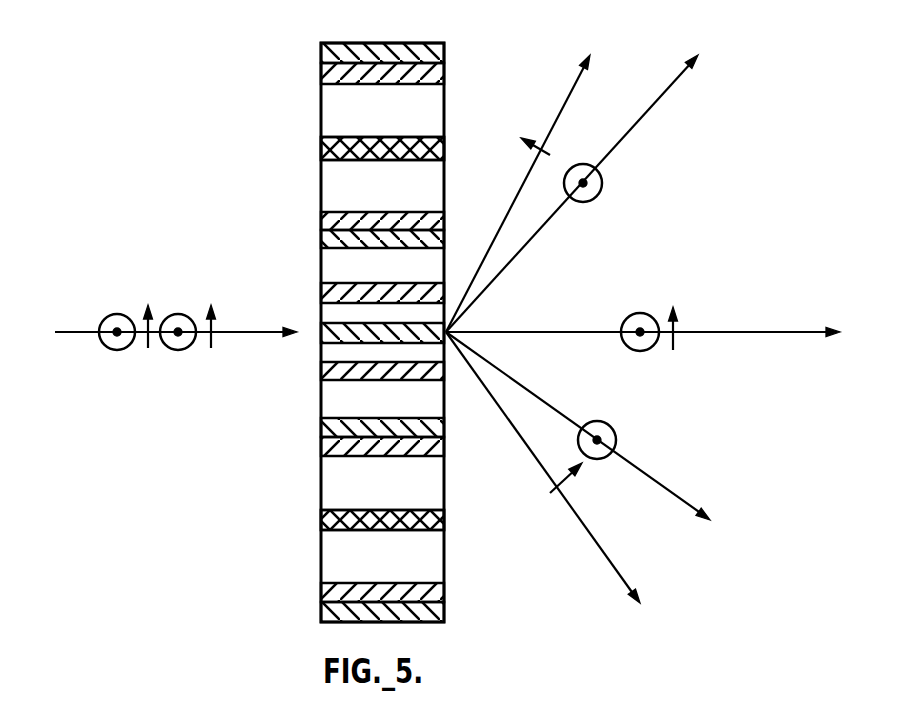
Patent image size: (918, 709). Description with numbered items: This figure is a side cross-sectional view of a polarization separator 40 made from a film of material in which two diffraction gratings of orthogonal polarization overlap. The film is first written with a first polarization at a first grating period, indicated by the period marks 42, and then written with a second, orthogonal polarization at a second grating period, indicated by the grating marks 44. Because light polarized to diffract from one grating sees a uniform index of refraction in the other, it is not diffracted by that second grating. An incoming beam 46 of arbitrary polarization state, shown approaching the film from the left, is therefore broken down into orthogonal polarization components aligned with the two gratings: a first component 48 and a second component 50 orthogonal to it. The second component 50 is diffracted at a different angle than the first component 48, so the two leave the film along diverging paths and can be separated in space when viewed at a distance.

The polarization separator 40 is at (250, 24).
The period marks 42 is at (321, 57).
The grating marks 44 is at (321, 75).
The beam 46 is at (78, 332).
The first component 48 is at (562, 107).
The second component 50 is at (622, 142).